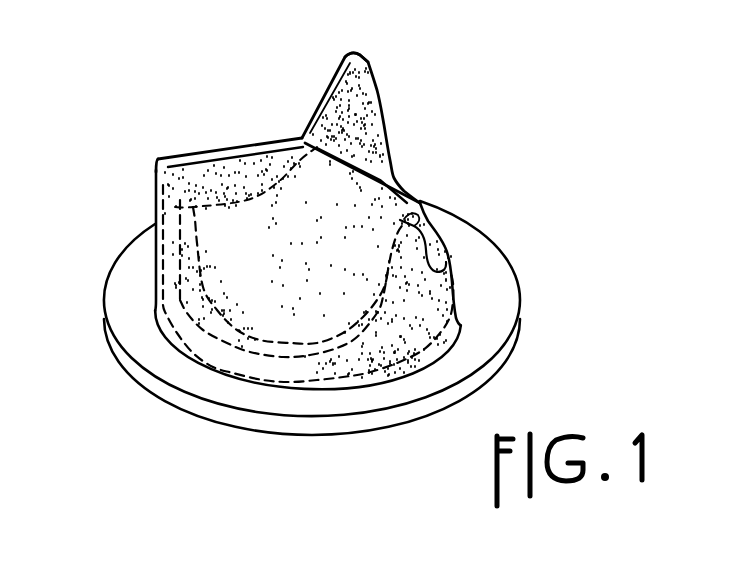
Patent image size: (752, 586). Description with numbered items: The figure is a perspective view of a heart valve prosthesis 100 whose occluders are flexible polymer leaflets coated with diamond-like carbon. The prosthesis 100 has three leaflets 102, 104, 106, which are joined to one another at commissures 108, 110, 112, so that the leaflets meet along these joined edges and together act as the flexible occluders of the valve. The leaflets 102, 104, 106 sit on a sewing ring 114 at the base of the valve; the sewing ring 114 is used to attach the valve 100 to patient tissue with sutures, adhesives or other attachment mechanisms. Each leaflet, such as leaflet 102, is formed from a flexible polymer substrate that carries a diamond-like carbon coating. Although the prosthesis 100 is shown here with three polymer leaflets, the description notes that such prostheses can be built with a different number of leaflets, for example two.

The heart valve prosthesis 100 is at (314, 221).
The leaflet 102 is at (265, 228).
The leaflet 104 is at (376, 107).
The leaflet 106 is at (226, 144).
The commissure 108 is at (428, 237).
The commissure 110 is at (360, 55).
The commissure 112 is at (155, 170).
The sewing ring 114 is at (460, 350).